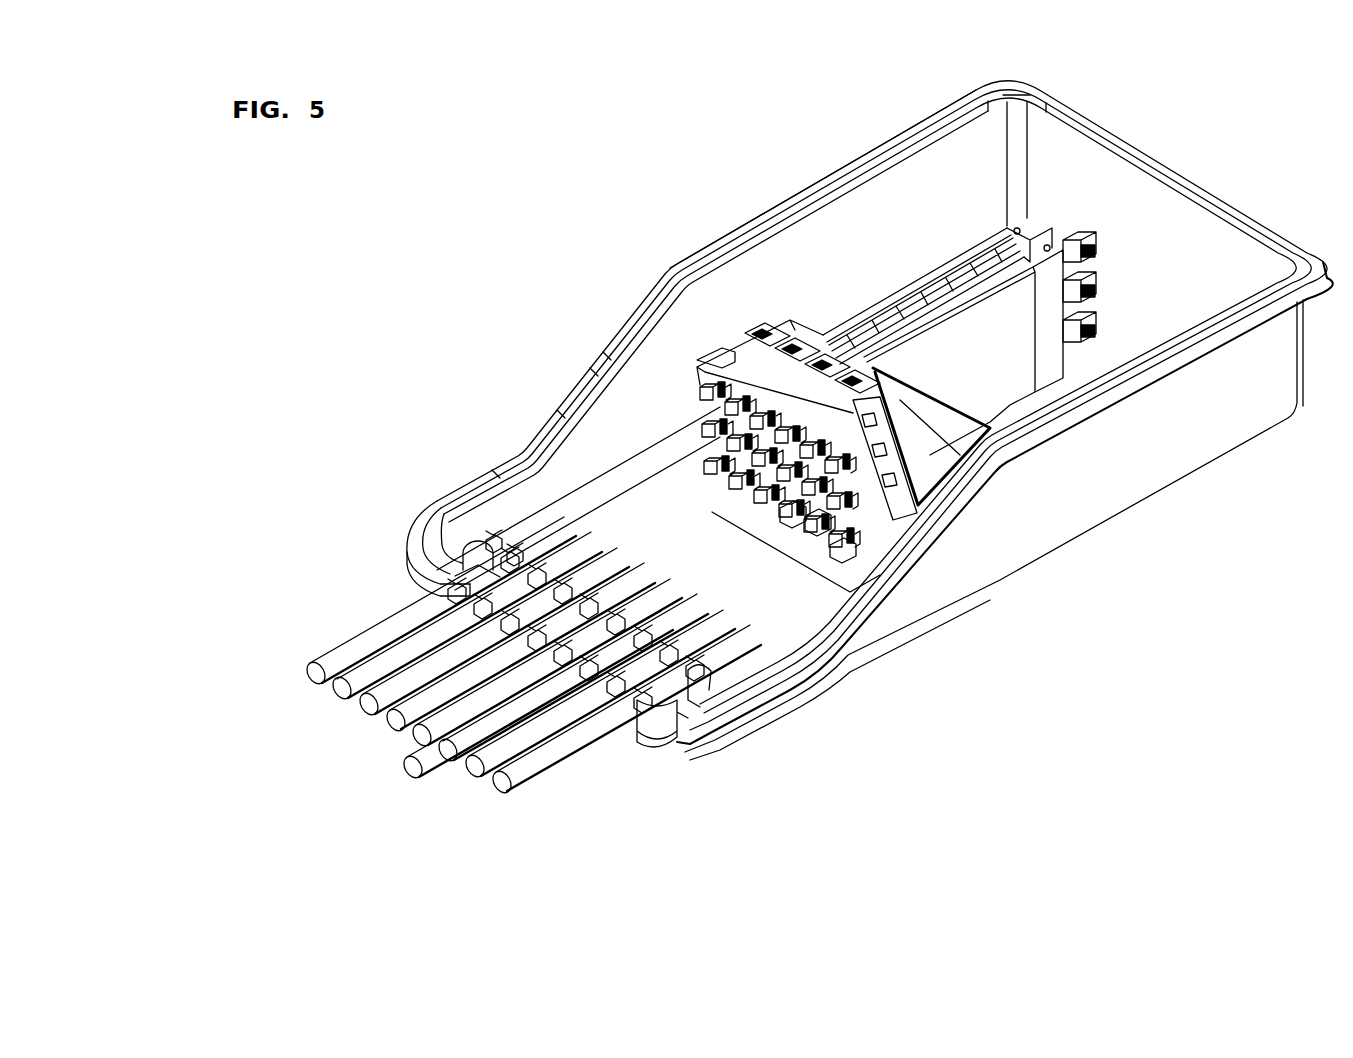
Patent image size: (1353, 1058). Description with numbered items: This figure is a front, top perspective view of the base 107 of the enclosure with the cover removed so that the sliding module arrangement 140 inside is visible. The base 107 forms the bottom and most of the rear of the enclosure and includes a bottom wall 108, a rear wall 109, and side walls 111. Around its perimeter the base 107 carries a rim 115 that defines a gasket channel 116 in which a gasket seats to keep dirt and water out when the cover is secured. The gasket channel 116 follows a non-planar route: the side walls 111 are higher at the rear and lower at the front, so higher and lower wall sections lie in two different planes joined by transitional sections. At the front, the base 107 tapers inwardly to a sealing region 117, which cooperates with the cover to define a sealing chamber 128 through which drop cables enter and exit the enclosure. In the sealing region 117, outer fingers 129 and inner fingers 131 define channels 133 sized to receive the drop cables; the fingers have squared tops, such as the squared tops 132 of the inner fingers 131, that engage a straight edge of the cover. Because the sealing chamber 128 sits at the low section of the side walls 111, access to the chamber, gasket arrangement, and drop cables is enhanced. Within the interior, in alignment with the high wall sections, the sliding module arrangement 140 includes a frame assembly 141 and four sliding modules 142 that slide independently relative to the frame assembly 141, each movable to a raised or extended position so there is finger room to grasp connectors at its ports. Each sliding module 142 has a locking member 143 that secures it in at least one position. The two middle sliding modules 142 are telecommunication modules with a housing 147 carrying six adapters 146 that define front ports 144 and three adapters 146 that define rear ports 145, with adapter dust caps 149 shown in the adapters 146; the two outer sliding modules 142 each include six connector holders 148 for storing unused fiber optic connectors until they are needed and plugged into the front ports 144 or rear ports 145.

The base 107 is at (1137, 513).
The bottom wall 108 is at (532, 601).
The rear wall 109 is at (1150, 193).
The side walls 111 is at (1223, 430).
The rim 115 is at (845, 165).
The gasket channel 116 is at (425, 538).
The sealing region 117 is at (650, 727).
The sealing chamber 128 is at (447, 582).
The outer fingers 129 is at (617, 697).
The inner fingers 131 is at (592, 604).
The squared tops 132 is at (690, 632).
The channels 133 is at (513, 562).
The sliding module arrangement 140 is at (826, 322).
The frame assembly 141 is at (927, 417).
The sliding module 142 is at (768, 322).
The locking member 143 is at (720, 345).
The front ports 144 is at (822, 553).
The rear ports 145 is at (1085, 300).
The adapters 146 is at (1042, 233).
The housing 147 is at (963, 352).
The connector holders 148 is at (847, 537).
The adapter dust caps 149 is at (1095, 333).